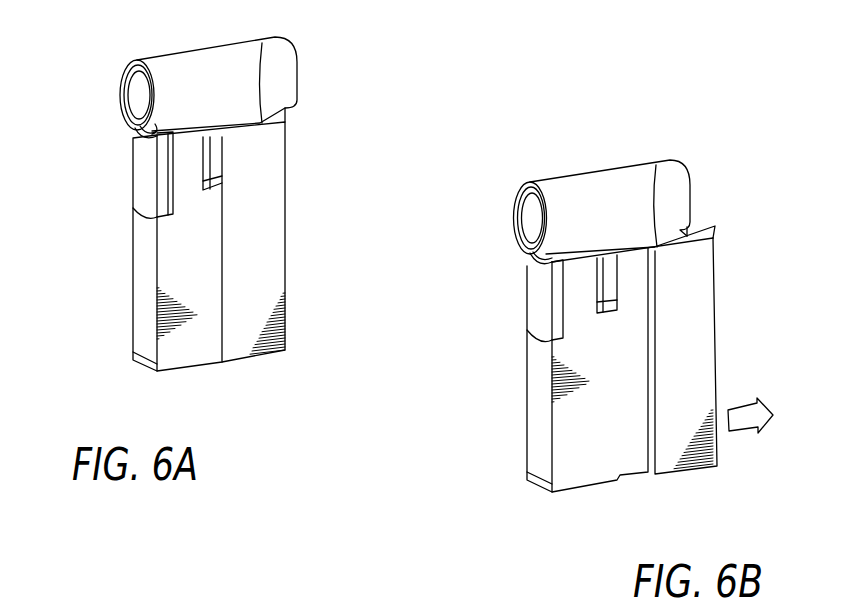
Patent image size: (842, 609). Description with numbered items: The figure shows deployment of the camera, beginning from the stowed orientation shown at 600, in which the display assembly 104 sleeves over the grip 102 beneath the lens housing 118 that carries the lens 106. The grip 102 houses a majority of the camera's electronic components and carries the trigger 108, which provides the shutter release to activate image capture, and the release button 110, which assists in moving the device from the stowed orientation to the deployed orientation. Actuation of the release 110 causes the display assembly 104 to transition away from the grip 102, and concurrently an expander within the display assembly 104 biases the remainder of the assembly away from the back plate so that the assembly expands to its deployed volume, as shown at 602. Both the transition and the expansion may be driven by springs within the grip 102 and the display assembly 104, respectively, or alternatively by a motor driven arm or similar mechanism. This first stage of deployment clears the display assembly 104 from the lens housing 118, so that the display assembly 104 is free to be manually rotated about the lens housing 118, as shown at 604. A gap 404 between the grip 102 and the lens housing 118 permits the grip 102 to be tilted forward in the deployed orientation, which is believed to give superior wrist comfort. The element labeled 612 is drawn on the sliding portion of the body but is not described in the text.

In FIG. 6A, the grip 102 is at (182, 363).
In FIG. 6A, the display assembly 104 is at (275, 240).
In FIG. 6B, the display assembly 104 is at (700, 363).
In FIG. 6A, the lens 106 is at (136, 88).
In FIG. 6A, the trigger 108 is at (133, 192).
In FIG. 6A, the release button 110 is at (223, 182).
In FIG. 6B, the release button 110 is at (618, 305).
In FIG. 6A, the lens housing 118 is at (212, 43).
In FIG. 6A, the gap 404 is at (140, 135).
In FIG. 6B, the gap 404 is at (527, 263).
In FIG. 6A, the stowed orientation 600 is at (360, 64).
In FIG. 6B, the expanded deployed volume stage 602 is at (716, 151).
In FIG. 6B, the rotation stage 604 is at (394, 607).
In FIG. 6B, the sliding portion 612 is at (632, 460).